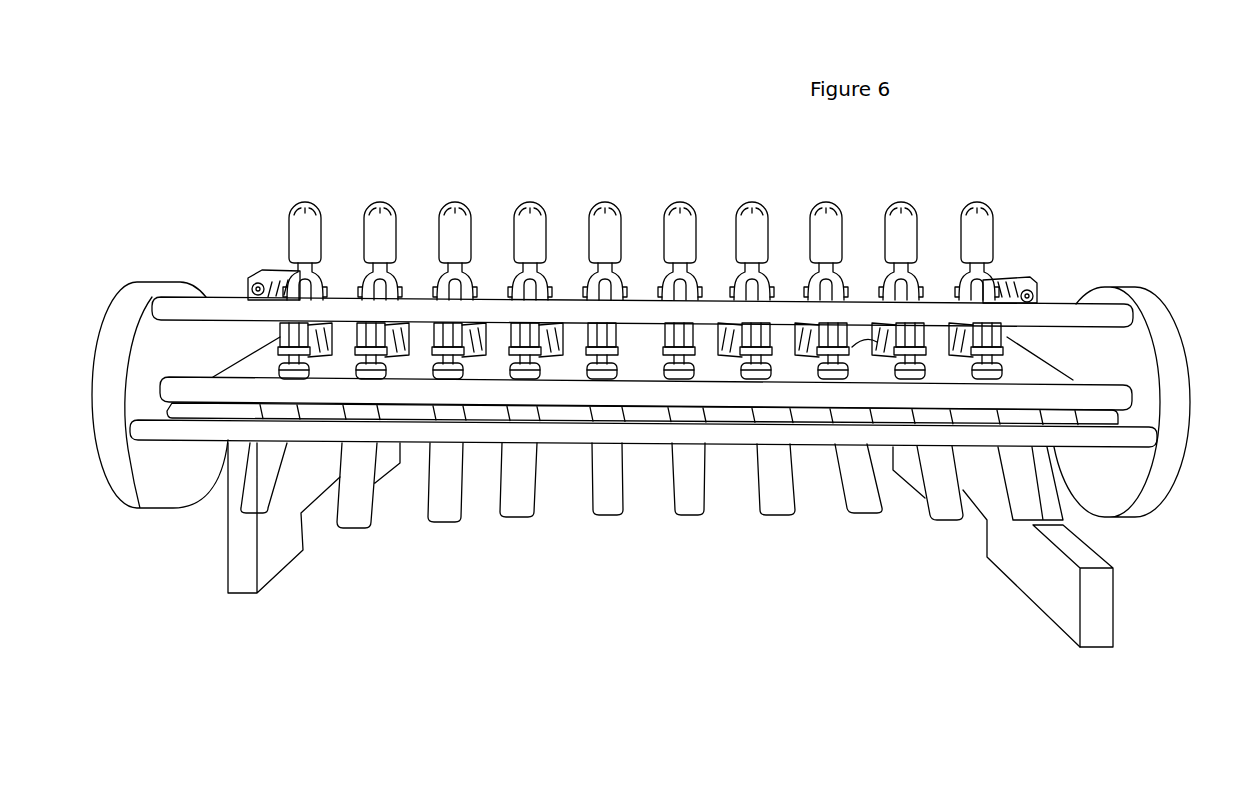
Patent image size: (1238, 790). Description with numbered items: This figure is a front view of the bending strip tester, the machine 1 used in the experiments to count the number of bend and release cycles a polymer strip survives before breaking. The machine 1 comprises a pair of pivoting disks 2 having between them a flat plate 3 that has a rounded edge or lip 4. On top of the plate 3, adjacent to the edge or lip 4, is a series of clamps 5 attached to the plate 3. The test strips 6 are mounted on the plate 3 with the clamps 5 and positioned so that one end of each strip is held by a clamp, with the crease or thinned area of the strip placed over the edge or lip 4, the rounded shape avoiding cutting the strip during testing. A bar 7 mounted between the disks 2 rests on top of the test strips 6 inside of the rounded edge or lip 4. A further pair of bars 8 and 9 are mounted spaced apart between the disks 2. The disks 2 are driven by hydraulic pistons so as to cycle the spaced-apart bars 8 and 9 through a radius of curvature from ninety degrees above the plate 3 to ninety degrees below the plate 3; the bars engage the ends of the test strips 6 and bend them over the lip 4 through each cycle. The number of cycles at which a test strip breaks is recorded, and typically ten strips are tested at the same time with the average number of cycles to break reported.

The machine 1 is at (663, 176).
The pivoting disks 2 is at (130, 308).
The flat plate 3 is at (262, 372).
The rounded edge or lip 4 is at (250, 413).
The clamps 5 is at (383, 227).
The test strips 6 is at (352, 510).
The bar 7 is at (960, 400).
The bar 8 is at (1097, 317).
The bar 9 is at (1087, 440).